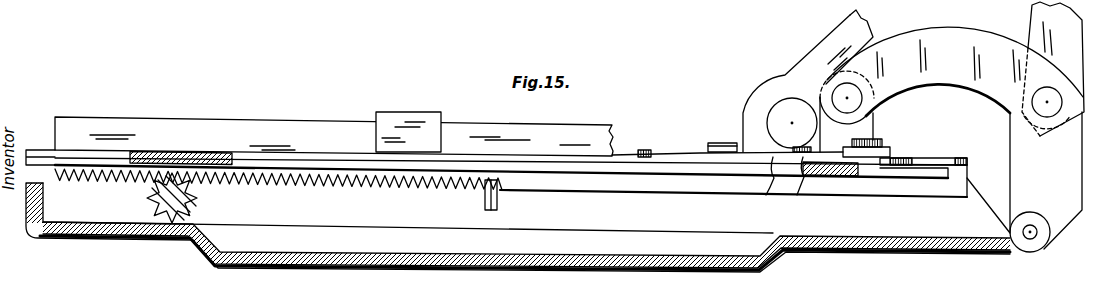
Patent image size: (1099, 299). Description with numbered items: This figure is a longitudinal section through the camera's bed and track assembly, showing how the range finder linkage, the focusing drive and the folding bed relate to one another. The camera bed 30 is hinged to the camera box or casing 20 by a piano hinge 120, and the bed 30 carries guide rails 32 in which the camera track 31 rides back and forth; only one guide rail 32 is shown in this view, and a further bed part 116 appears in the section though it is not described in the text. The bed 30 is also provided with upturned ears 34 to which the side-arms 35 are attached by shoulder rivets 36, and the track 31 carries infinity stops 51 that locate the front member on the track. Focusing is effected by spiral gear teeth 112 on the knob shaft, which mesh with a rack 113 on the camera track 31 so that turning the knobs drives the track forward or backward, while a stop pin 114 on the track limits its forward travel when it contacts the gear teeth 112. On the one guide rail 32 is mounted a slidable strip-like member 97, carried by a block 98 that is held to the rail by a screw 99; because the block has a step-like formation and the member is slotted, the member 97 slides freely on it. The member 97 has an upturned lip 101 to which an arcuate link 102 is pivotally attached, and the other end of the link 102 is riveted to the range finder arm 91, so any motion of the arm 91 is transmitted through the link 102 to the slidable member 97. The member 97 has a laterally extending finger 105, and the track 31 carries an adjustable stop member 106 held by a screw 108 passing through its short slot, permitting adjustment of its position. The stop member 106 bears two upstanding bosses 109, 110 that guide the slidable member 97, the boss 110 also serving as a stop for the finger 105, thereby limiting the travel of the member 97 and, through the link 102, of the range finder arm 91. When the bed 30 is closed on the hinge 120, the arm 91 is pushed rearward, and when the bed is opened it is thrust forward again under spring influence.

The camera box or casing 20 is at (1010, 125).
The camera bed 30 is at (130, 238).
The camera track 31 is at (303, 125).
The guide rails 32 is at (38, 148).
The upturned ears 34 is at (762, 97).
The side-arms 35 is at (833, 42).
The shoulder rivets 36 is at (784, 108).
The infinity stops 51 is at (409, 113).
The range finder arm 91 is at (1042, 34).
The slidable strip-like member 97 is at (666, 155).
The block 98 is at (842, 149).
The screw 99 is at (880, 140).
The upturned lip 101 is at (875, 120).
The arcuate link 102 is at (982, 41).
The laterally extending finger 105 is at (908, 162).
The adjustable stop member 106 is at (766, 194).
The screw 108 is at (797, 195).
The upstanding boss 109 is at (722, 134).
The upstanding boss 110 is at (888, 153).
The spiral gear teeth 112 is at (190, 197).
The rack 113 is at (336, 184).
The stop pin 114 is at (485, 201).
The bottom plate 116 is at (615, 219).
The piano hinge 120 is at (1031, 252).